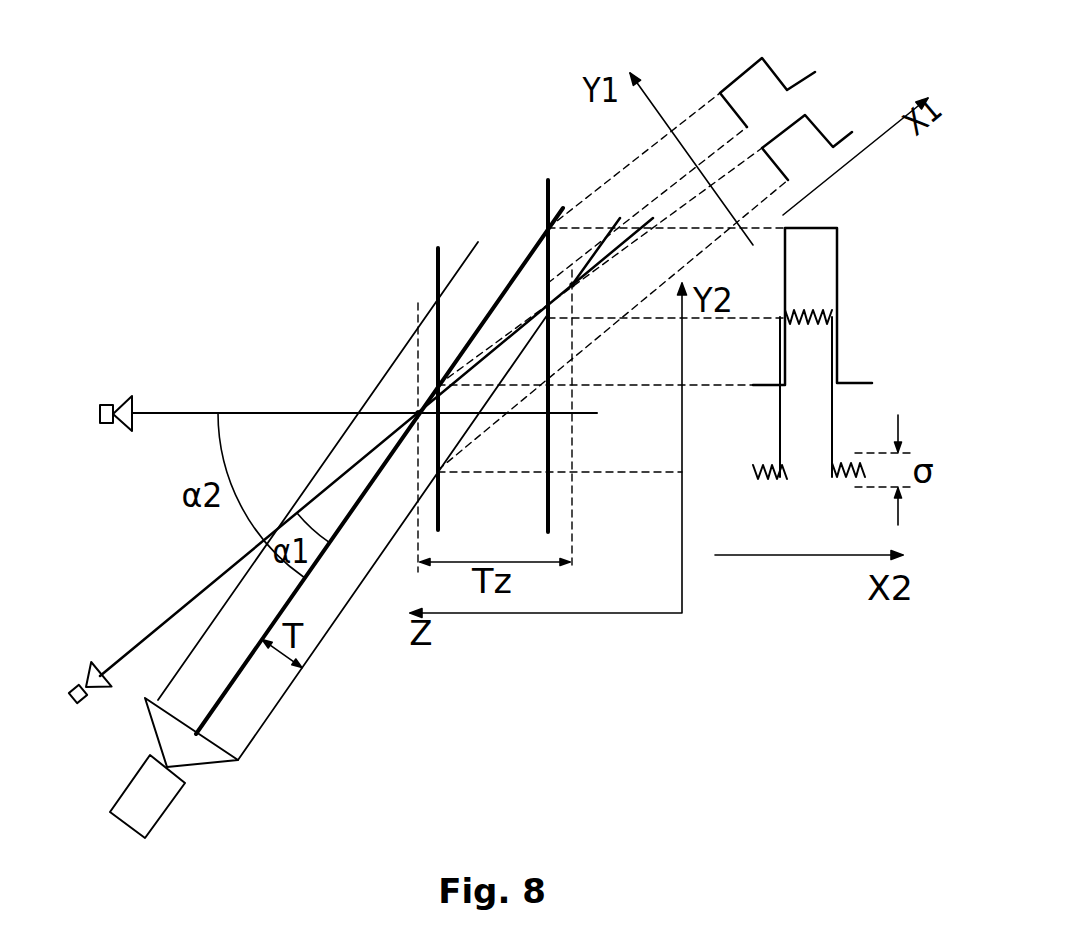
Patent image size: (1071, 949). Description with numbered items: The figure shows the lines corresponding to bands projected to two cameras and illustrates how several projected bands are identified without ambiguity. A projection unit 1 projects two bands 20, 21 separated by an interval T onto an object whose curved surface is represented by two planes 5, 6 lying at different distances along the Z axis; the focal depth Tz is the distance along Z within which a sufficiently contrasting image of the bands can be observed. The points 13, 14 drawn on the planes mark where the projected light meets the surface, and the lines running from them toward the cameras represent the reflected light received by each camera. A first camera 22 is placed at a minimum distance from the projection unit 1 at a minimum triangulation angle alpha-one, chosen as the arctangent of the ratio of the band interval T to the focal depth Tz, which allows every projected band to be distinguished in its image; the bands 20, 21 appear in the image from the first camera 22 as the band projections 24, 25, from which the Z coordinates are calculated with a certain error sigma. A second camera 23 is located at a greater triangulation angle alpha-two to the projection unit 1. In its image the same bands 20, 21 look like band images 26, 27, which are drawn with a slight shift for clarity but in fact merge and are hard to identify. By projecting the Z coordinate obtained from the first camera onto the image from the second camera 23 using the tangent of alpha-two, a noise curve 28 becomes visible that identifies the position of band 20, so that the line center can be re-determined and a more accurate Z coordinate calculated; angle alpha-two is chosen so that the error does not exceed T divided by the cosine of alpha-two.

The projection unit 1 is at (182, 785).
The plane 5 is at (437, 263).
The plane 6 is at (545, 192).
The first reflection point 13 is at (413, 410).
The second reflection point 14 is at (574, 286).
The projected band 20 is at (282, 687).
The projected band 21 is at (303, 587).
The first camera 22 is at (73, 688).
The second camera 23 is at (100, 400).
The band projection 24 is at (803, 73).
The band projection 25 is at (850, 133).
The band image 26 is at (838, 275).
The band image 27 is at (830, 437).
The noise curve 28 is at (847, 478).